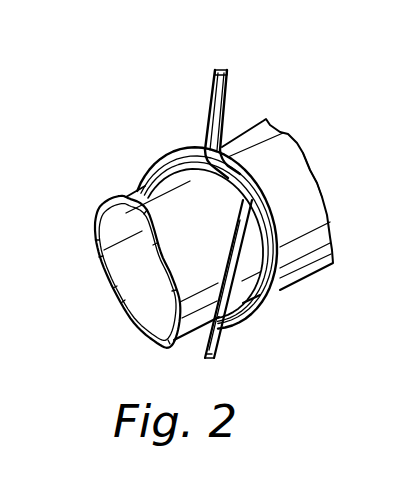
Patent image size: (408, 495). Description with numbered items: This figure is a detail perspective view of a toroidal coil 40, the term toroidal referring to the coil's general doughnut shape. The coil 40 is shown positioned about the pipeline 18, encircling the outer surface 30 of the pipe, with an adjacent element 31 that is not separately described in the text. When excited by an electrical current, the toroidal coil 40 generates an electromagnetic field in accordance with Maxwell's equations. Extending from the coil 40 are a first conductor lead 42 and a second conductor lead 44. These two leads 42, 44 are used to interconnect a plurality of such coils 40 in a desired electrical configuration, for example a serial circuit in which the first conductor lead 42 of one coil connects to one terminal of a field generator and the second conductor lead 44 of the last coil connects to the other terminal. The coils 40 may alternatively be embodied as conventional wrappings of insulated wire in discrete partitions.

The pipeline 18 is at (302, 199).
The outer surface 30 is at (288, 161).
The front flange ring 31 is at (133, 300).
The toroidal coil 40 is at (220, 207).
The first conductor lead 42 is at (227, 73).
The second conductor lead 44 is at (213, 353).